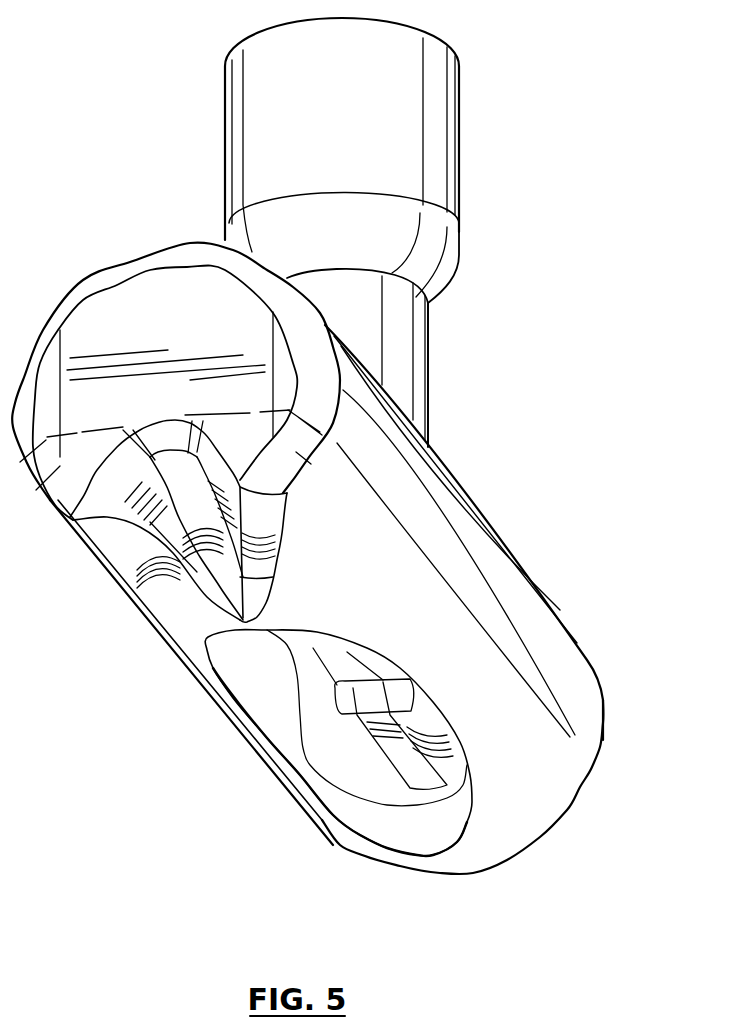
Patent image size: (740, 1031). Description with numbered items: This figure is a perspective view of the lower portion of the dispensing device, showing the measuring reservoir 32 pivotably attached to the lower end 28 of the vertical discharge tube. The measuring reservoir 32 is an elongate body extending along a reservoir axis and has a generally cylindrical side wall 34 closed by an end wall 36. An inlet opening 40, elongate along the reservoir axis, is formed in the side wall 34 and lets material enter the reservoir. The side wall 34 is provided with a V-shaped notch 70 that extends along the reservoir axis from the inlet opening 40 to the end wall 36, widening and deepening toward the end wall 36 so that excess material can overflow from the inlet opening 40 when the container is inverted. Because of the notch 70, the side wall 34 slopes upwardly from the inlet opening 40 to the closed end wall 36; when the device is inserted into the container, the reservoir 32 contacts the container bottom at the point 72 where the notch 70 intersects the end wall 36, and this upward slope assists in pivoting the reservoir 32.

The lower end 28 is at (413, 352).
The measuring reservoir 32 is at (583, 544).
The side wall 34 is at (547, 783).
The end wall 36 is at (130, 300).
The inlet opening 40 is at (278, 710).
The V-shaped notch 70 is at (183, 518).
The point 72 is at (265, 500).